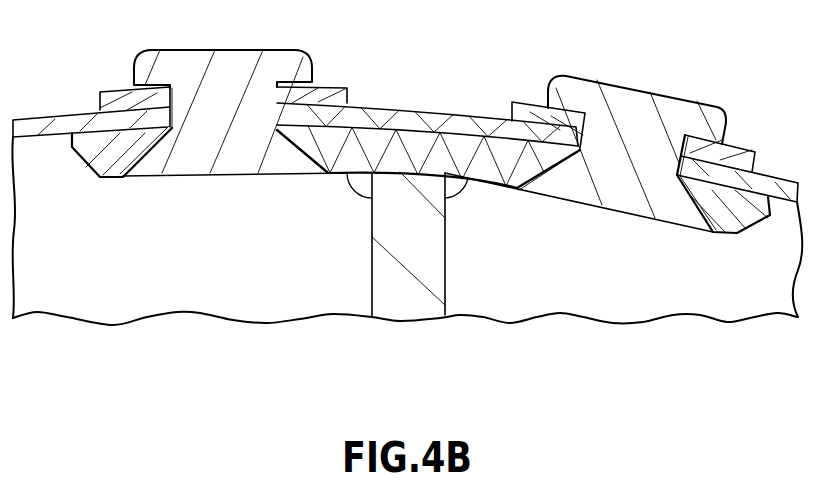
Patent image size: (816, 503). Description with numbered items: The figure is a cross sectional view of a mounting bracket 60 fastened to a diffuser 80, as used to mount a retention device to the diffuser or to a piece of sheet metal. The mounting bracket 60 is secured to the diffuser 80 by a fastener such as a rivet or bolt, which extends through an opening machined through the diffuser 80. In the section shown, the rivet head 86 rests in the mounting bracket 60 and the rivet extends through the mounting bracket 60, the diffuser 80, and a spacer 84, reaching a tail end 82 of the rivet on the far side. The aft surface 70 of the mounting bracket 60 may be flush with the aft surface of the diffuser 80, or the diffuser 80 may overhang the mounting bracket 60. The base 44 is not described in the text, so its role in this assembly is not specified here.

The substrate 44 is at (397, 312).
The mounting bracket 60 is at (97, 140).
The aft surface 70 is at (388, 140).
The diffuser 80 is at (450, 123).
The tail end 82 is at (702, 120).
The spacer 84 is at (738, 155).
The rivet head 86 is at (558, 181).